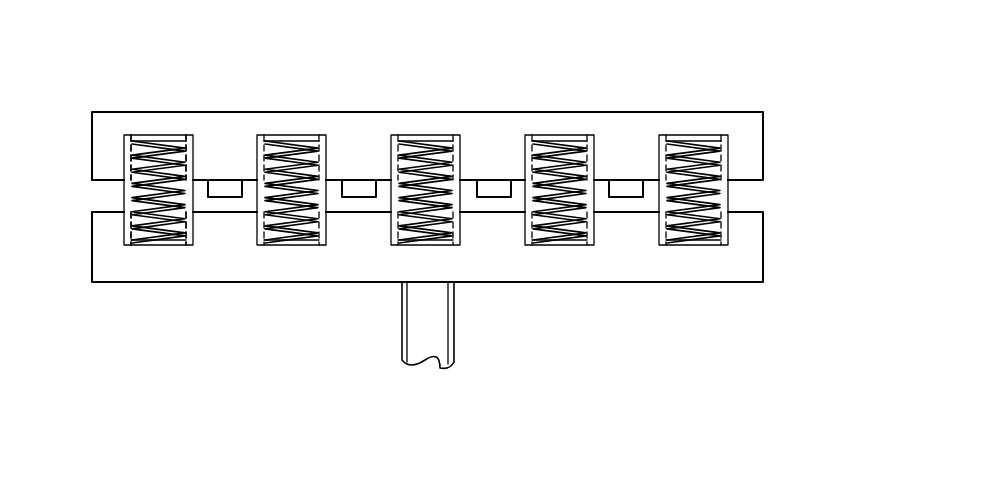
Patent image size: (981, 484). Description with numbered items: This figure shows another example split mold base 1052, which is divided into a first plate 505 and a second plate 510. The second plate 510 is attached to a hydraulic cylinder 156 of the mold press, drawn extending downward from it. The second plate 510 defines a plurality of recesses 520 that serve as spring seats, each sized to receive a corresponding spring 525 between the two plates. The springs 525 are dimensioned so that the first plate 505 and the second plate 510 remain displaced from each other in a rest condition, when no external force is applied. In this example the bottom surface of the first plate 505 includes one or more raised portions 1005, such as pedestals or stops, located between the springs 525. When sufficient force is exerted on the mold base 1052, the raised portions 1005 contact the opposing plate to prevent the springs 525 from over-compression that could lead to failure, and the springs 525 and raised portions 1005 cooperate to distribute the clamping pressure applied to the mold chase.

The split mold base 1052 is at (144, 61).
The first plate 505 is at (92, 142).
The second plate 510 is at (92, 253).
The recesses 520 is at (135, 228).
The springs 525 is at (160, 247).
The raised portions 1005 is at (618, 183).
The hydraulic cylinder 156 is at (402, 345).